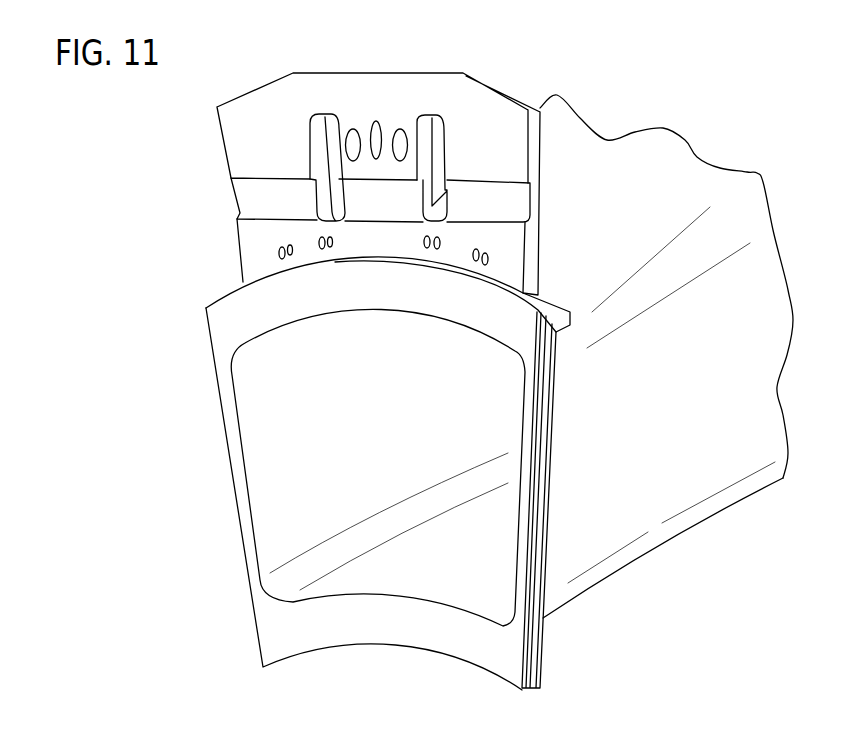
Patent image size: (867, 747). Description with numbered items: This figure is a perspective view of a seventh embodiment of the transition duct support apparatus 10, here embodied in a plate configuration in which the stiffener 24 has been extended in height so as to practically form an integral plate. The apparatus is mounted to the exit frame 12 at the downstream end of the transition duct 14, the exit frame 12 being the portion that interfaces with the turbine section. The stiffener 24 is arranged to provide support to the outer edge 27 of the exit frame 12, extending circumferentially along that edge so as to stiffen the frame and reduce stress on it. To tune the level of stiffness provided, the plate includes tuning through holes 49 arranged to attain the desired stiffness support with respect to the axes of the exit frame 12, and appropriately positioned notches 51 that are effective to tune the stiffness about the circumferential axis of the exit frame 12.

The transition duct support apparatus 10 is at (194, 250).
The exit frame 12 is at (237, 486).
The transition duct 14 is at (692, 402).
The stiffener 24 is at (380, 237).
The outer edge 27 is at (462, 279).
The tuning through holes 49 is at (322, 112).
The notches 51 is at (248, 192).